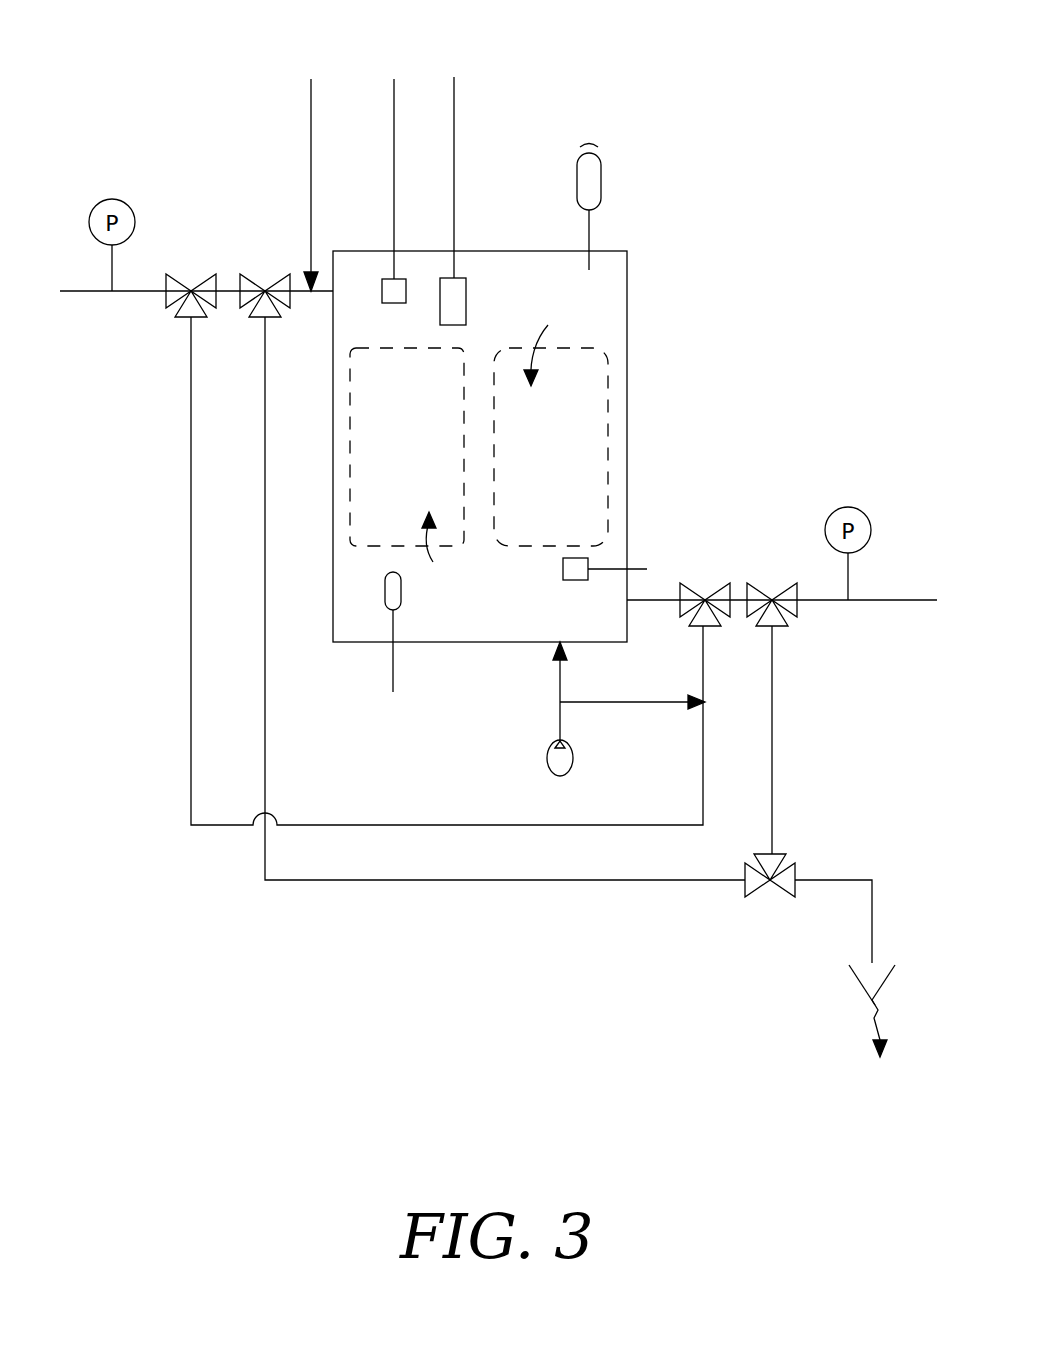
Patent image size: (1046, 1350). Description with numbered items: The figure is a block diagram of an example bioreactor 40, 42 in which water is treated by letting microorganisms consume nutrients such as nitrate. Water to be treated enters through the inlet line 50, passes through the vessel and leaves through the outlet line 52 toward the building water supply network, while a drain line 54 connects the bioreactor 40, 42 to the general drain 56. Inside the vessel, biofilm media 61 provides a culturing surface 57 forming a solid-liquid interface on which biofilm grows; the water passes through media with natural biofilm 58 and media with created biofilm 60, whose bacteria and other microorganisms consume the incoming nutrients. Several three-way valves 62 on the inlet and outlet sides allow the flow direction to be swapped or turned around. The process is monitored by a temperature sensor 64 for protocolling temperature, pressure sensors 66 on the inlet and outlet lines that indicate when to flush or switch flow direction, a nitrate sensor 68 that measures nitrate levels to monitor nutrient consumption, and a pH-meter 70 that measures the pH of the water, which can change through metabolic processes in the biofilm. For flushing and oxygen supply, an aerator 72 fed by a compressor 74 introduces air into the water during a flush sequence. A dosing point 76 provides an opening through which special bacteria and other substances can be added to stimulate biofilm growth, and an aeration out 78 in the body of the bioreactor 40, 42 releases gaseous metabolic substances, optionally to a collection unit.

The bioreactor 40 is at (157, 80).
The bioreactor 42 is at (480, 446).
The inlet line 50 is at (85, 292).
The outlet line 52 is at (897, 602).
The drain line 54 is at (838, 880).
The general drain 56 is at (862, 1000).
The culturing surface 57 is at (510, 446).
The media with natural biofilm 58 is at (608, 405).
The media with created biofilm 60 is at (349, 428).
The biofilm media 61 is at (368, 503).
The three-way valve 62 is at (178, 282).
The temperature sensor 64 is at (455, 95).
The pressure sensor 66 is at (133, 214).
The nitrate sensor 68 is at (393, 93).
The pH-meter 70 is at (395, 665).
The aerator 72 is at (560, 690).
The compressor 74 is at (573, 762).
The dosing point 76 is at (311, 100).
The aeration out 78 is at (602, 180).